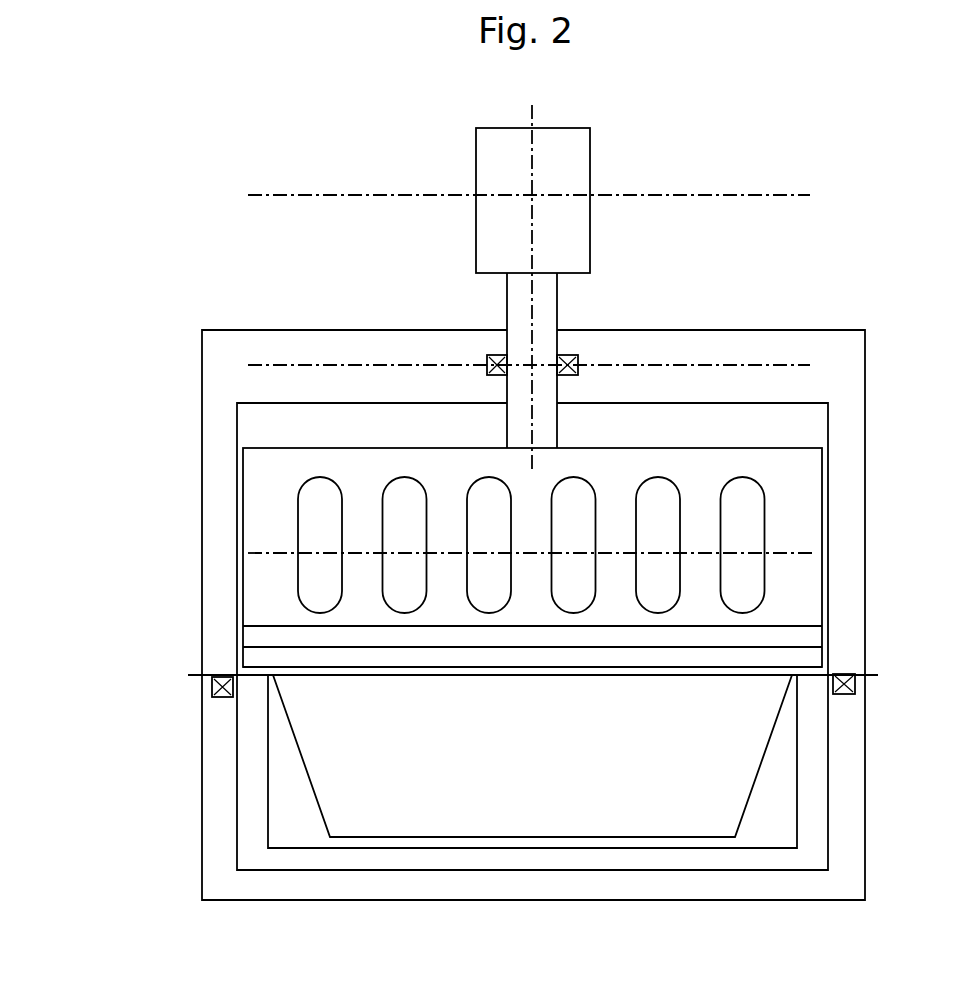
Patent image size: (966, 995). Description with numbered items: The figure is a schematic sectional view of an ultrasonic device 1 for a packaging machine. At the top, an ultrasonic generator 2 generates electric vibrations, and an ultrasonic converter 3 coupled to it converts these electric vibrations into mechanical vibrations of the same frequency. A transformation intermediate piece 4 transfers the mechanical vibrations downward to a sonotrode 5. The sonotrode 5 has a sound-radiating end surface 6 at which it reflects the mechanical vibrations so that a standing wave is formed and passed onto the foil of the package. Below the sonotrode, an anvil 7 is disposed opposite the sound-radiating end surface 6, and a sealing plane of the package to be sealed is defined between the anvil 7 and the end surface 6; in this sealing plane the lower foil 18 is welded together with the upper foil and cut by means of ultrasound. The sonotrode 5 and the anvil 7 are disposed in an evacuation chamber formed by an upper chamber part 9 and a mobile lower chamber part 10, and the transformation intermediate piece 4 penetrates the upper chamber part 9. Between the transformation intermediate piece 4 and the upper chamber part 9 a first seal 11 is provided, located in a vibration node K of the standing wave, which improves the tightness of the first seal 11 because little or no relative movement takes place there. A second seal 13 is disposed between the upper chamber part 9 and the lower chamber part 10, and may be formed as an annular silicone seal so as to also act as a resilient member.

The ultrasonic device 1 is at (175, 230).
The ultrasonic generator 2 is at (573, 158).
The ultrasonic converter 3 is at (890, 83).
The transformation intermediate piece 4 is at (546, 299).
The sonotrode 5 is at (265, 495).
The sound-radiating end surface 6 is at (718, 667).
The anvil 7 is at (807, 743).
The upper chamber part 9 is at (265, 353).
The lower chamber part 10 is at (220, 732).
The first seal 11 is at (580, 355).
The second seal 13 is at (202, 675).
The lower foil 18 is at (677, 748).
The vibration node K is at (810, 363).